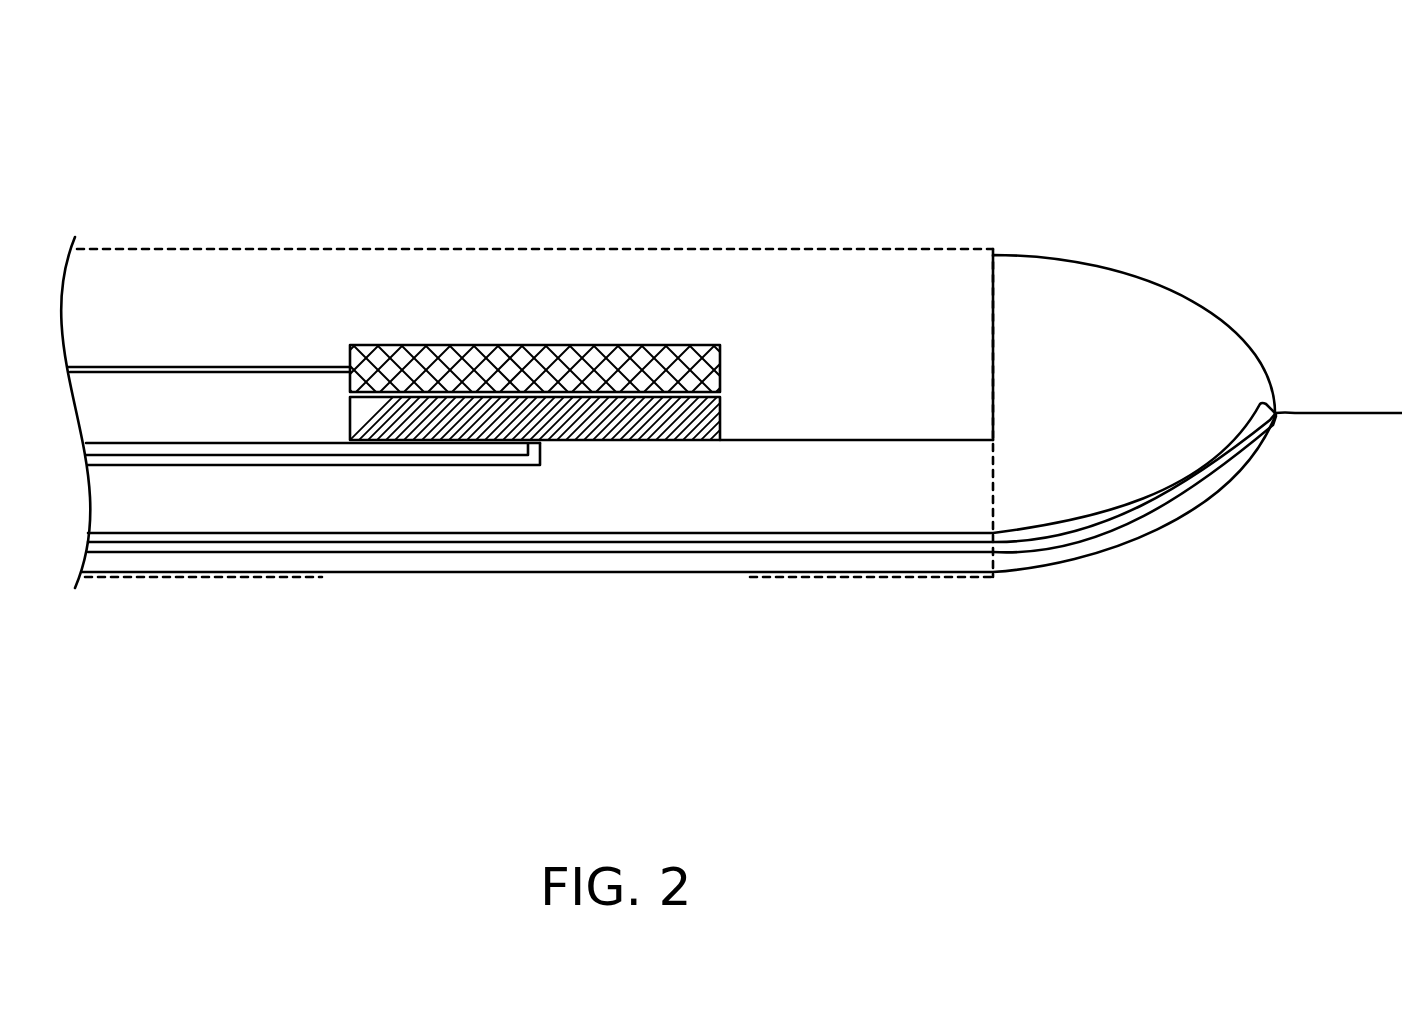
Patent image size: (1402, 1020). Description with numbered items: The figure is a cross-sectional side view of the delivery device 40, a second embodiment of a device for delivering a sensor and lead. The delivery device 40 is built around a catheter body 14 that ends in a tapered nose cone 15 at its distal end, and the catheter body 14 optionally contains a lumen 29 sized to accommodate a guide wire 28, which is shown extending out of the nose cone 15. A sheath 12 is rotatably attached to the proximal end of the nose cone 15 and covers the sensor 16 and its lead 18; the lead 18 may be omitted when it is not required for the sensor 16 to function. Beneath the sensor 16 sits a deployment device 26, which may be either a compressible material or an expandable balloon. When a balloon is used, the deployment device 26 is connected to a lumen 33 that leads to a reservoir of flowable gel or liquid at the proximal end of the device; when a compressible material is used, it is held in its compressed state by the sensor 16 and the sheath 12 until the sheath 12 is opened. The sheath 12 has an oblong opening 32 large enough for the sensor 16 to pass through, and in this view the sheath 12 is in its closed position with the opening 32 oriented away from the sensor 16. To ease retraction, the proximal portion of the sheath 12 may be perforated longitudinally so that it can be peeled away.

The delivery device 40 is at (357, 126).
The sheath 12 is at (648, 247).
The catheter body 14 is at (820, 505).
The tapered nose cone 15 is at (1127, 312).
The sensor 16 is at (448, 345).
The lead 18 is at (150, 367).
The deployment device 26 is at (352, 447).
The guide wire 28 is at (1347, 415).
The lumen 29 is at (1068, 542).
The oblong opening 32 is at (750, 592).
The lumen 33 is at (163, 468).